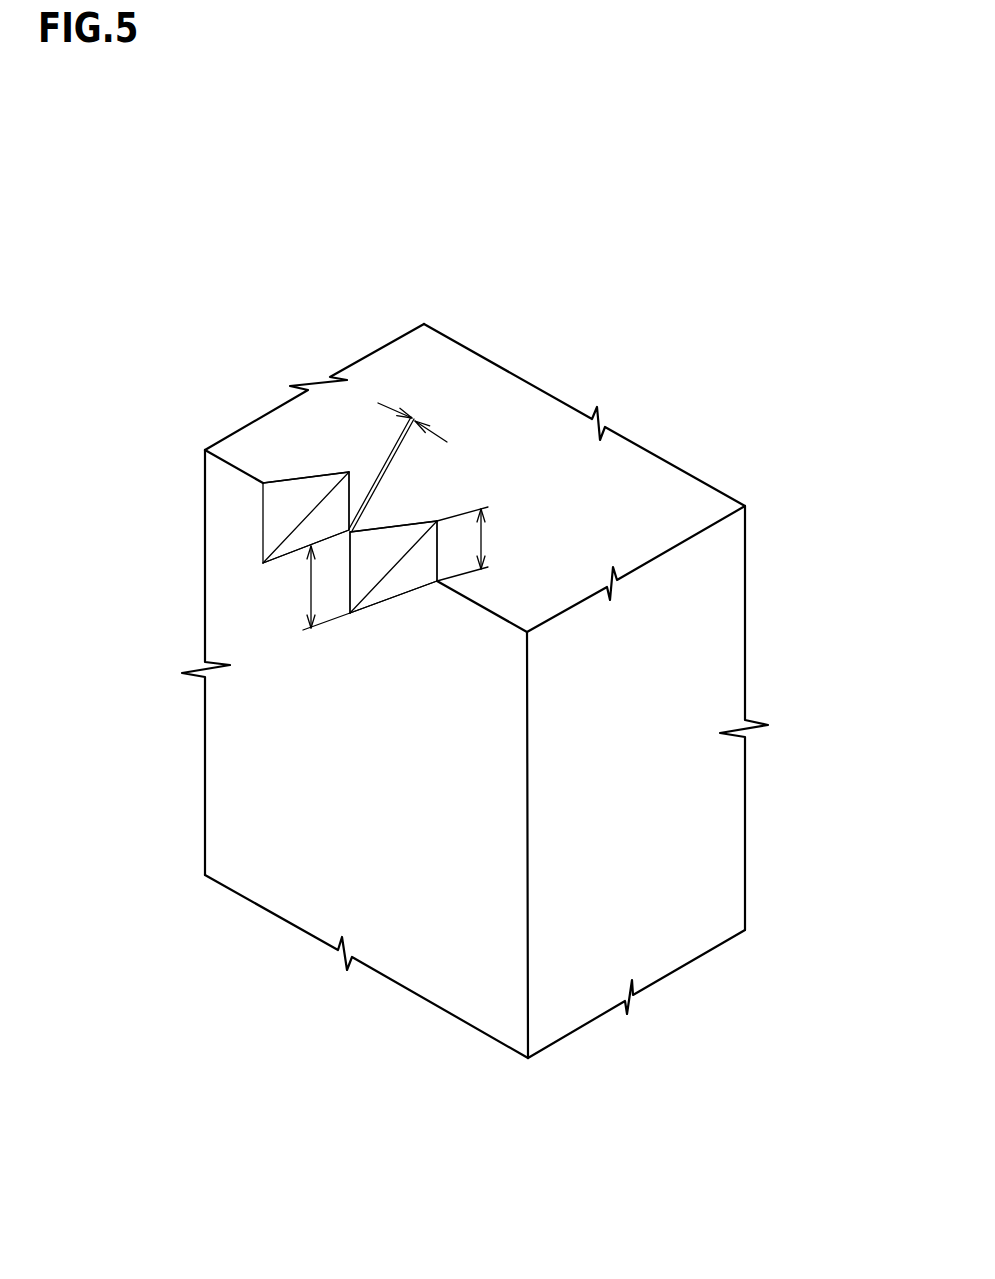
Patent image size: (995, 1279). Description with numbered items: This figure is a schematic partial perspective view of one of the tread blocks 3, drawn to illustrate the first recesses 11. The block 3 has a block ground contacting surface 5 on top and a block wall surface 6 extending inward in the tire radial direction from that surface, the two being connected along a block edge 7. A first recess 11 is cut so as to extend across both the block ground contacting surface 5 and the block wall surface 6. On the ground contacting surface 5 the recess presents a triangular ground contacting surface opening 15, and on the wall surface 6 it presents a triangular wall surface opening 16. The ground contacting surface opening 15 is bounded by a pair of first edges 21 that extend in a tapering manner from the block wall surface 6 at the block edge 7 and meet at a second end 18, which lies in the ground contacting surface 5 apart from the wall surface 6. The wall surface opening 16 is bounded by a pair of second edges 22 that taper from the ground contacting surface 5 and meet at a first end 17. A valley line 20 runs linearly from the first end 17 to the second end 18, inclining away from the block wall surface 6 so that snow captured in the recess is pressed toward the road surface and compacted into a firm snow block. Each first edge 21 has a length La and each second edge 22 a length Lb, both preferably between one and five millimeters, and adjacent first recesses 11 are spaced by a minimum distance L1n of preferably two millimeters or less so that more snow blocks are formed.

The block 3 is at (567, 274).
The block ground contacting surface 5 is at (610, 484).
The block wall surface 6 is at (487, 957).
The block edge 7 is at (232, 467).
The first recess 11 is at (335, 650).
The ground contacting surface opening 15 is at (333, 467).
The wall surface opening 16 is at (430, 610).
The first end 17 is at (350, 613).
The second end 18 is at (437, 521).
The valley line 20 is at (393, 570).
The first edge 21 is at (352, 472).
The second edge 22 is at (262, 522).
The minimum distance between adjacent first recesses L1n is at (414, 418).
The length of first edge La is at (487, 537).
The length of second edge Lb is at (312, 588).